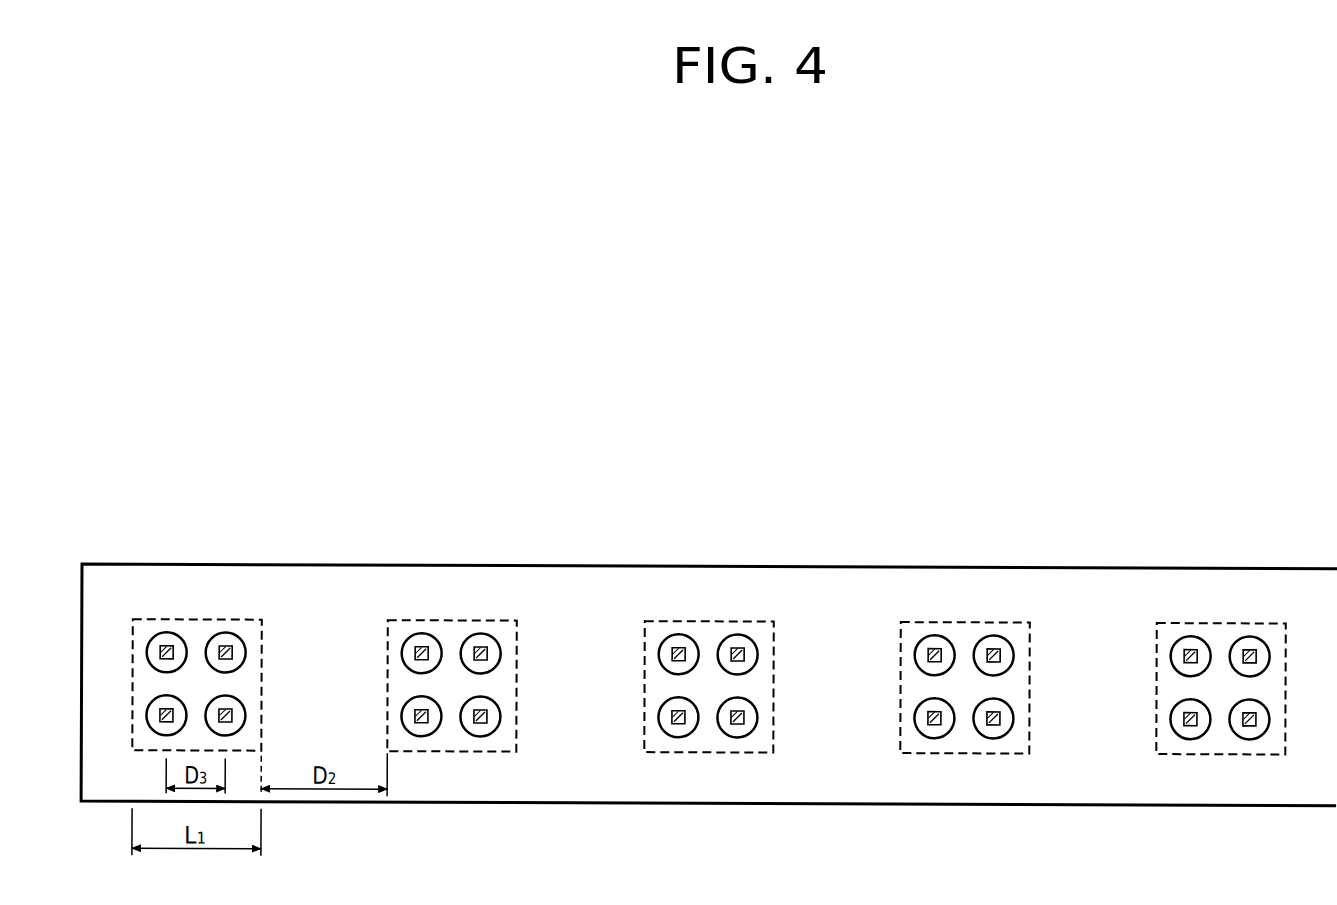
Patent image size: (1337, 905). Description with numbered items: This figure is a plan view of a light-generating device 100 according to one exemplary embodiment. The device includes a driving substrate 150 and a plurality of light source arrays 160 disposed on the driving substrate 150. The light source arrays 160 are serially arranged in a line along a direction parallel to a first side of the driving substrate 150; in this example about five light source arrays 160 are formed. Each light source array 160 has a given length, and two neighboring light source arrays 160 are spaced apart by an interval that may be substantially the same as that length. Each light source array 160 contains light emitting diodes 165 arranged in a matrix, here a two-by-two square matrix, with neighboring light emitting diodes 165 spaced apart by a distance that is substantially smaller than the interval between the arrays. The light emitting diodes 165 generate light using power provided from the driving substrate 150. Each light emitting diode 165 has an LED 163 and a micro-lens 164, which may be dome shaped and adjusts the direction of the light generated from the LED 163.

The light source module 100 is at (709, 619).
The driving substrate 150 is at (372, 574).
The light source array 160 is at (211, 599).
The LED 163 is at (163, 646).
The micro-lens 164 is at (172, 641).
The light emitting diode 165 is at (172, 560).